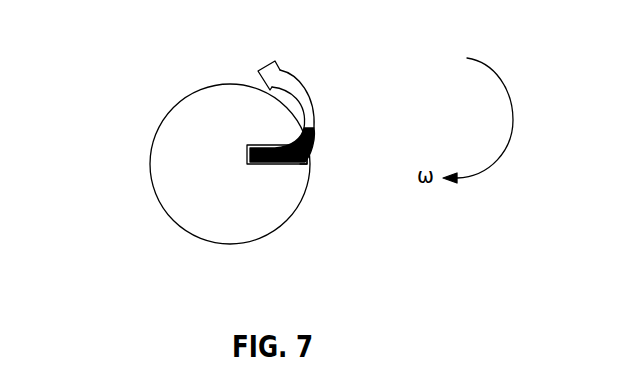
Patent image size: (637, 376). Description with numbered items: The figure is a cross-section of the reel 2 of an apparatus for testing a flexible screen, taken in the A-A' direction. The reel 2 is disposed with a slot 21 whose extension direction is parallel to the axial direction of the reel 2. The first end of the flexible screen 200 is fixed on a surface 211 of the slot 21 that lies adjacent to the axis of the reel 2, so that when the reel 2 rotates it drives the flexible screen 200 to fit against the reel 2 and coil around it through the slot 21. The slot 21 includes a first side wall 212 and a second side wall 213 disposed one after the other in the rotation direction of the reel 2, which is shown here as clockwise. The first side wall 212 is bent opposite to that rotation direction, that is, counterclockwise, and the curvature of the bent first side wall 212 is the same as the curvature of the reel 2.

The reel 2 is at (262, 207).
The slot 21 is at (78, 28).
The surface of the slot 211 is at (247, 149).
The first side wall 212 is at (287, 134).
The second side wall 213 is at (307, 164).
The flexible screen 200 is at (296, 81).